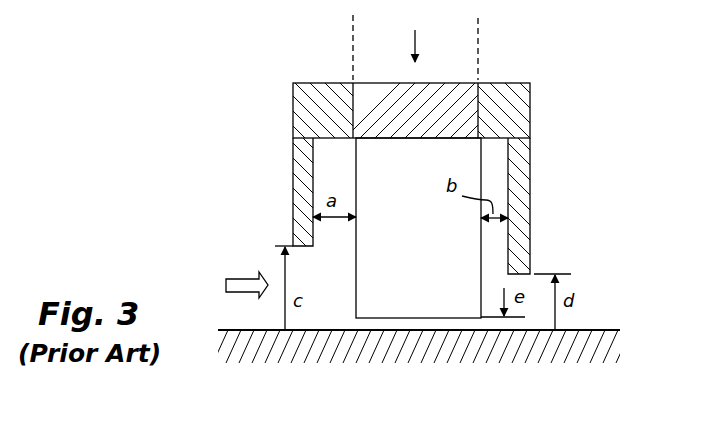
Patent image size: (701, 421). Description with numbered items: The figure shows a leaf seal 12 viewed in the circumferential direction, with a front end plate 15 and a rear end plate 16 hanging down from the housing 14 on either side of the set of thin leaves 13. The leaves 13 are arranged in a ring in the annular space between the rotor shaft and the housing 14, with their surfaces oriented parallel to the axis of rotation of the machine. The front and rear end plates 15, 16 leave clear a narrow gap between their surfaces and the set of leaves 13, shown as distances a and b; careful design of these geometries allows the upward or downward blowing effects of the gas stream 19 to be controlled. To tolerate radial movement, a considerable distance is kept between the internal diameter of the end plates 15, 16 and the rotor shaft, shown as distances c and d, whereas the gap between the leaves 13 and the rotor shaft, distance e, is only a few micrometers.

The leaf seal 12 is at (415, 40).
The leaf 13 is at (426, 295).
The housing 14 is at (513, 83).
The front end plate 15 is at (301, 196).
The rear end plate 16 is at (519, 190).
The gas stream 19 is at (249, 280).